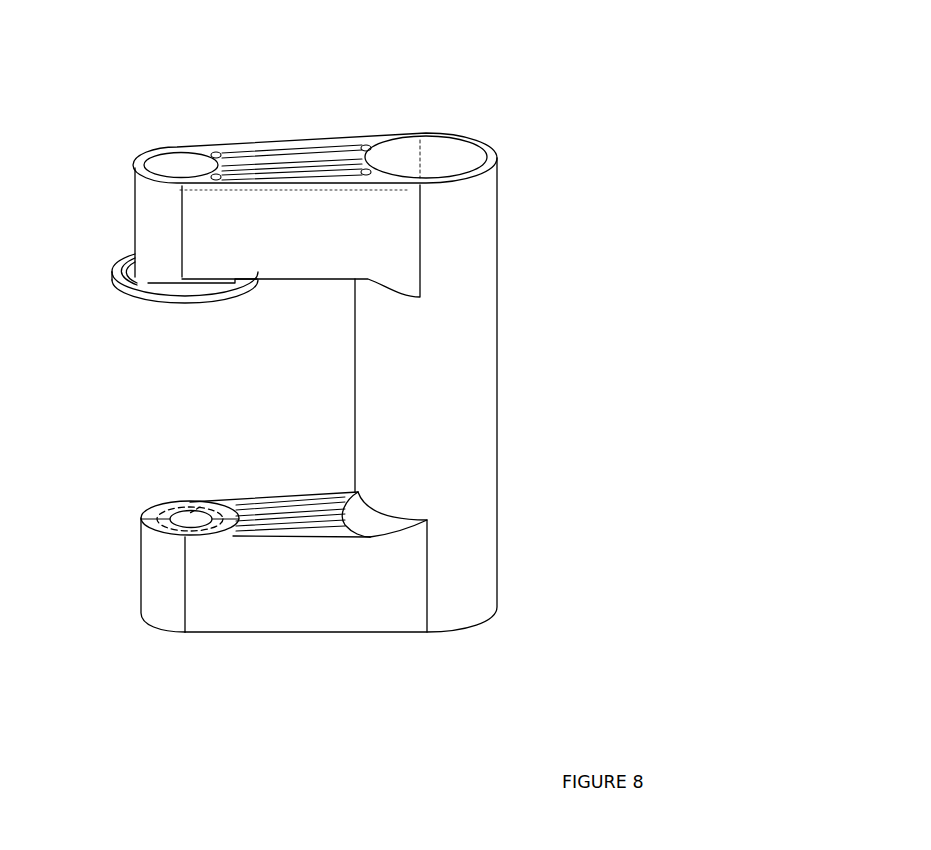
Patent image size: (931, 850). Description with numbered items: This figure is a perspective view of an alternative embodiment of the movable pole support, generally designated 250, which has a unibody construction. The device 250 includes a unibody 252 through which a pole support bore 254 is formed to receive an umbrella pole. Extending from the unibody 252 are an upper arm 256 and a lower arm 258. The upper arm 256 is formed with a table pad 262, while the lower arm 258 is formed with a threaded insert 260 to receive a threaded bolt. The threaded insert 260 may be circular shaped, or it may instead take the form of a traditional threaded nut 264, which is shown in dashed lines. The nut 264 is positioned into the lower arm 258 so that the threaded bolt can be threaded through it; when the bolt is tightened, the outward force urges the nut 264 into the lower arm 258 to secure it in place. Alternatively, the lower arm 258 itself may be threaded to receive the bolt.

The movable pole support 250 is at (178, 116).
The unibody 252 is at (485, 391).
The pole support bore 254 is at (438, 145).
The upper arm 256 is at (135, 192).
The lower arm 258 is at (150, 568).
The threaded insert 260 is at (150, 508).
The table pad 262 is at (113, 284).
The threaded nut 264 is at (200, 507).